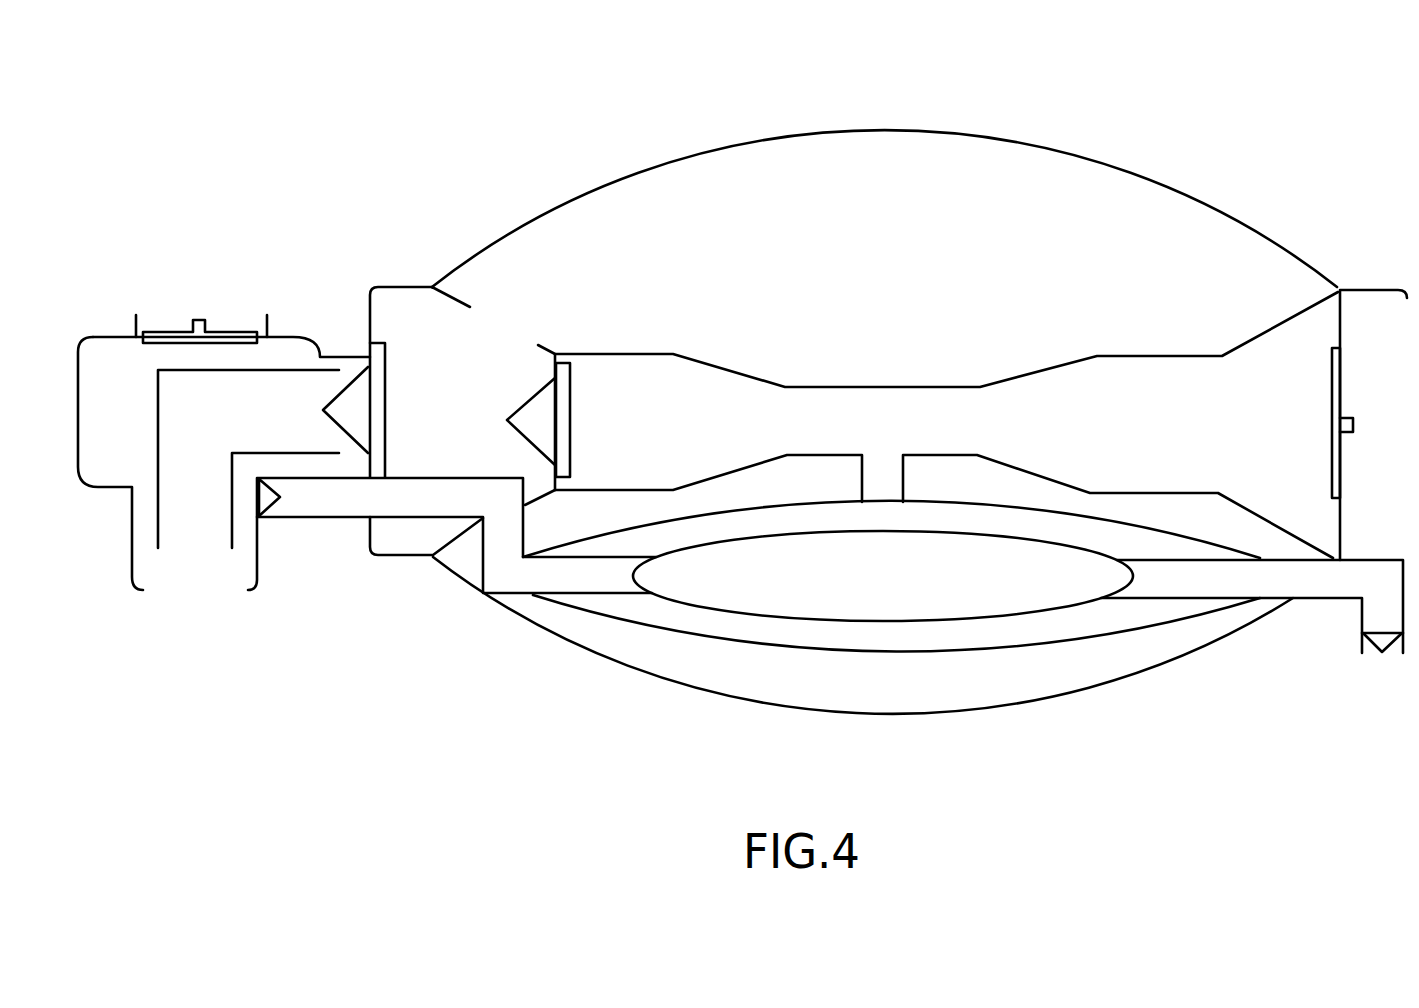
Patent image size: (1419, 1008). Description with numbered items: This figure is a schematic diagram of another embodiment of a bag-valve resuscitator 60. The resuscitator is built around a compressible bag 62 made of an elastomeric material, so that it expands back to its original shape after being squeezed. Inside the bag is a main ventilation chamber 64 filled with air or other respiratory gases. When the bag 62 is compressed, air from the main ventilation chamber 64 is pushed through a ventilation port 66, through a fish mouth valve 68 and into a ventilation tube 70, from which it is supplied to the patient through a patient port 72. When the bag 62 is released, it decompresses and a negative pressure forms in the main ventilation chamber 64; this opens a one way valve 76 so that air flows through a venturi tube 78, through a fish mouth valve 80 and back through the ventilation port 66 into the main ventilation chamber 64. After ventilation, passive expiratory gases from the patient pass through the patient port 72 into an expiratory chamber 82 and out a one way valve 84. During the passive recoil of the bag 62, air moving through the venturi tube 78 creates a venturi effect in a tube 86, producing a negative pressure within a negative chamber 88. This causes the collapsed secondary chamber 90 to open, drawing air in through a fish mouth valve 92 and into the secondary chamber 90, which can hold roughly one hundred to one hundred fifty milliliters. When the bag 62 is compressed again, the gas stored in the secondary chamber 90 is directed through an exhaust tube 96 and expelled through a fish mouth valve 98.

The bag-valve resuscitator 60 is at (1172, 130).
The compressible bag 62 is at (692, 157).
The main ventilation chamber 64 is at (1080, 213).
The ventilation port 66 is at (493, 312).
The fish mouth valve 68 is at (382, 330).
The ventilation tube 70 is at (295, 397).
The patient port 72 is at (192, 580).
The one way valve 76 is at (1333, 328).
The venturi tube 78 is at (887, 367).
The fish mouth valve 80 is at (570, 353).
The expiratory chamber 82 is at (110, 395).
The one way valve 84 is at (204, 310).
The tube 86 is at (878, 487).
The negative chamber 88 is at (650, 617).
The secondary chamber 90 is at (760, 615).
The fish mouth valve 92 is at (267, 524).
The exhaust tube 96 is at (1193, 580).
The fish mouth valve 98 is at (1362, 657).